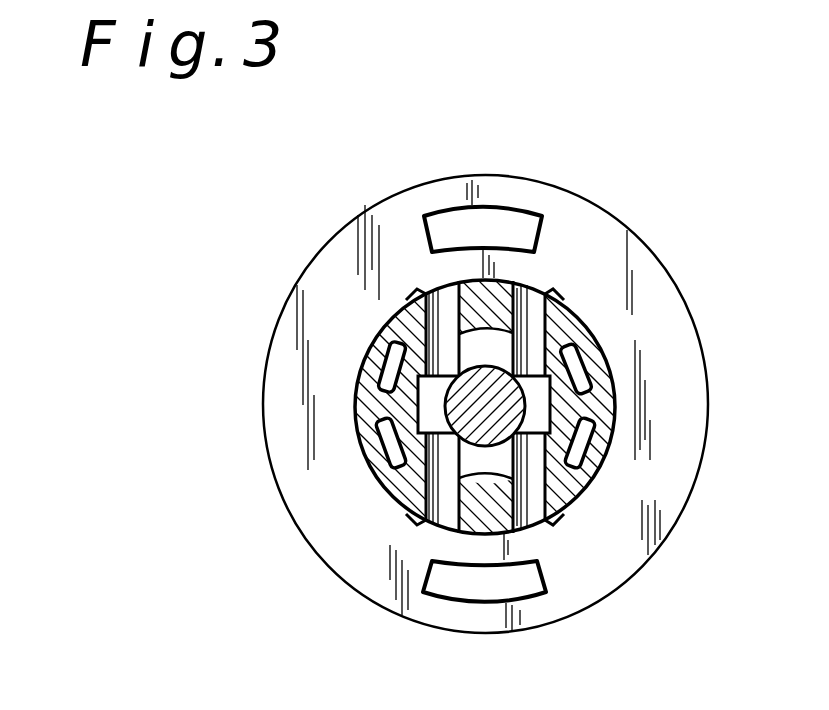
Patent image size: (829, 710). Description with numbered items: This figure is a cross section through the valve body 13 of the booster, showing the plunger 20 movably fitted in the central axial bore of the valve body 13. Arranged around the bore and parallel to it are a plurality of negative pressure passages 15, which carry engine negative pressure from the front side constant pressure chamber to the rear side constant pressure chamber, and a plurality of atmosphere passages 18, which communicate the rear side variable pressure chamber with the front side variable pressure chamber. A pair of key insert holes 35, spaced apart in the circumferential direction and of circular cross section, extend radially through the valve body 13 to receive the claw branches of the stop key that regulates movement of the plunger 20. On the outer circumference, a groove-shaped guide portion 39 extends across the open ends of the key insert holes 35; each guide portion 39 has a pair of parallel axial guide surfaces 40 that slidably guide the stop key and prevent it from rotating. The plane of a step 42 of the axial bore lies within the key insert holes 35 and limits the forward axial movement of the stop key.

The valve body 13 is at (304, 256).
The negative pressure passages 15 is at (387, 430).
The atmosphere passages 18 is at (520, 218).
The plunger 20 is at (467, 428).
The key insert holes 35 is at (447, 506).
The guide portion 39 is at (466, 276).
The guide surfaces 40 is at (415, 299).
The step 42 is at (543, 330).